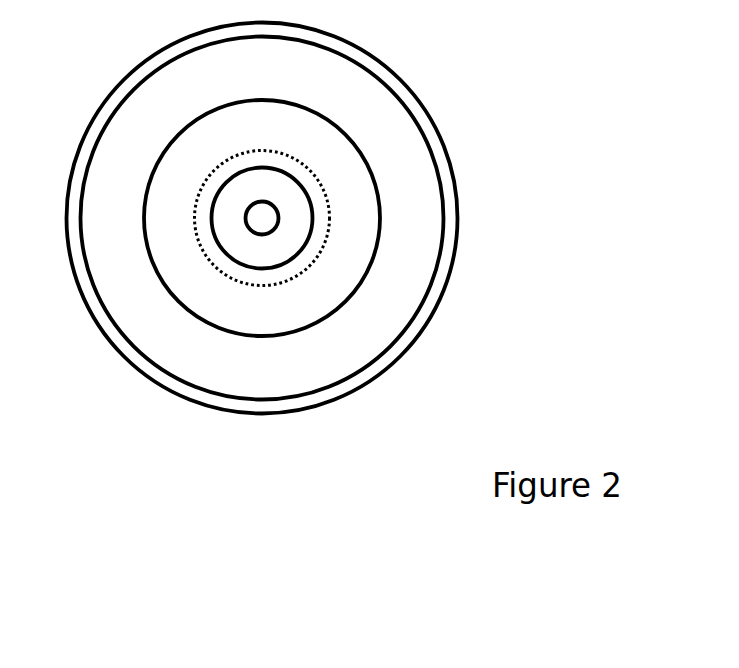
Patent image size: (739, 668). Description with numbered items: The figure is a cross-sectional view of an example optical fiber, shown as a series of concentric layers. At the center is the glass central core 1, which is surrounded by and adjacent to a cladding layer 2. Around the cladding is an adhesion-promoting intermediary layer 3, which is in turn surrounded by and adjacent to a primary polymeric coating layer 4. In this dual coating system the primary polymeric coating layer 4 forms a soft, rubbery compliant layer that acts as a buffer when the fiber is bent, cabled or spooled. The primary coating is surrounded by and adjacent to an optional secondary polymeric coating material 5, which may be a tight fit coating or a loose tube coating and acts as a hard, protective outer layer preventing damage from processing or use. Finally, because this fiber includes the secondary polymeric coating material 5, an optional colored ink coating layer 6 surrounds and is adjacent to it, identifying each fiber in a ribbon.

The central core 1 is at (275, 207).
The cladding layer 2 is at (311, 201).
The adhesion-promoting intermediary layer 3 is at (328, 218).
The primary polymeric coating layer 4 is at (378, 233).
The secondary polymeric coating material 5 is at (427, 300).
The ink coating layer 6 is at (417, 353).